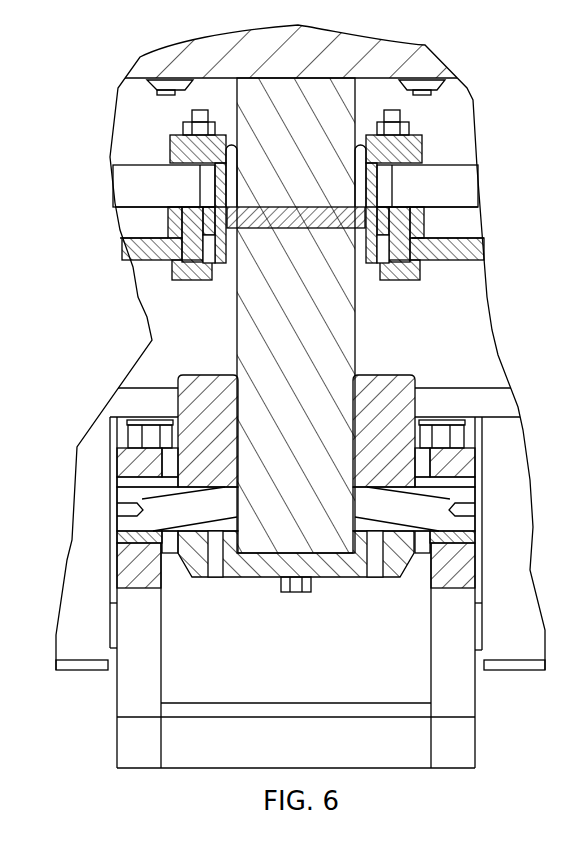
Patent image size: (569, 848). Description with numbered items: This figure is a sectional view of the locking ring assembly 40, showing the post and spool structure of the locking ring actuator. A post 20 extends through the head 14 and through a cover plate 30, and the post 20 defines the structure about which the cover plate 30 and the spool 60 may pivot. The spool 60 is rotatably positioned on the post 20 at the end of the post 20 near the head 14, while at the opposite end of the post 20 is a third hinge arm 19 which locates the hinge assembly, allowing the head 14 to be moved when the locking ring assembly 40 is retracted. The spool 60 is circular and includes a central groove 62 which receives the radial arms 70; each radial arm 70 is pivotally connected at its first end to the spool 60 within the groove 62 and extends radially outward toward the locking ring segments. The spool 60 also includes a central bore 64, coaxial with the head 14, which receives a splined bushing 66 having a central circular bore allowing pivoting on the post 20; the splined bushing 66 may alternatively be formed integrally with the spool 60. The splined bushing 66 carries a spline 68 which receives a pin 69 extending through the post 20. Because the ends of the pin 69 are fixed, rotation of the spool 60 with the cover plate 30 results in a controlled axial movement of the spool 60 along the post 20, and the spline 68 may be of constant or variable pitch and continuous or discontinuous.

The head 14 is at (408, 58).
The third hinge arm 19 is at (423, 372).
The post 20 is at (350, 347).
The cover plate 30 is at (468, 253).
The locking ring assembly 40 is at (105, 118).
The spool 60 is at (295, 198).
The central groove 62 is at (143, 237).
The central bore 64 is at (190, 148).
The splined bushing 66 is at (232, 152).
The spline 68 is at (226, 262).
The pin 69 is at (306, 207).
The radial arm 70 is at (133, 187).